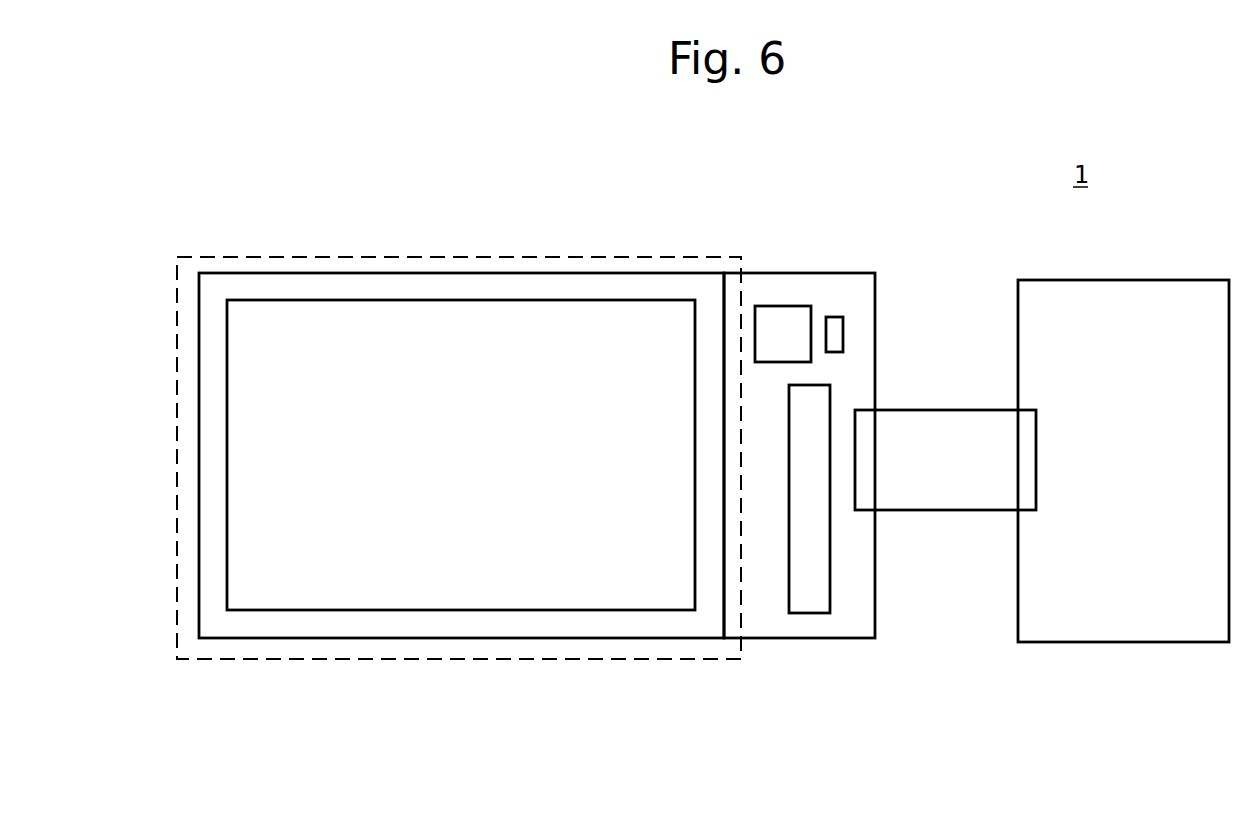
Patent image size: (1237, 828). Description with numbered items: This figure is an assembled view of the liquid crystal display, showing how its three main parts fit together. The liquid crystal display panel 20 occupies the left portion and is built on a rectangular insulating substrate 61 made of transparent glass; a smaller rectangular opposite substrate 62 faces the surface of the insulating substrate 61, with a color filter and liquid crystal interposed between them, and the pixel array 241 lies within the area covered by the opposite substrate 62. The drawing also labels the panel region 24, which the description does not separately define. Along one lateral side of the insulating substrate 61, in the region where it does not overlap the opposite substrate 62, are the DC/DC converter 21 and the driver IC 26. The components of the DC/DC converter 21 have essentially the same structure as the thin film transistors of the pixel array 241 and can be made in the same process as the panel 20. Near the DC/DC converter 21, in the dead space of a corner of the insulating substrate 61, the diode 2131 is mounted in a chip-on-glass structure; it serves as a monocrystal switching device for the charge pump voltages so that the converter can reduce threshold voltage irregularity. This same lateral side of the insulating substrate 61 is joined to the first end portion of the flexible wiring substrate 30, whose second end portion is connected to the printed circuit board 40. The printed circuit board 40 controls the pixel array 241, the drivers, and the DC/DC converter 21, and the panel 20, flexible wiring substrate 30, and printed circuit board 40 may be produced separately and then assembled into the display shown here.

The liquid crystal display panel 20 is at (220, 268).
The DC/DC converter 21 is at (781, 305).
The display panel 24 is at (414, 257).
The pixel array 241 is at (341, 610).
The driver IC 26 is at (816, 557).
The flexible wiring substrate 30 is at (937, 500).
The printed circuit board 40 is at (1167, 279).
The insulating substrate 61 is at (821, 641).
The opposite substrate 62 is at (617, 626).
The diode 2131 is at (834, 316).